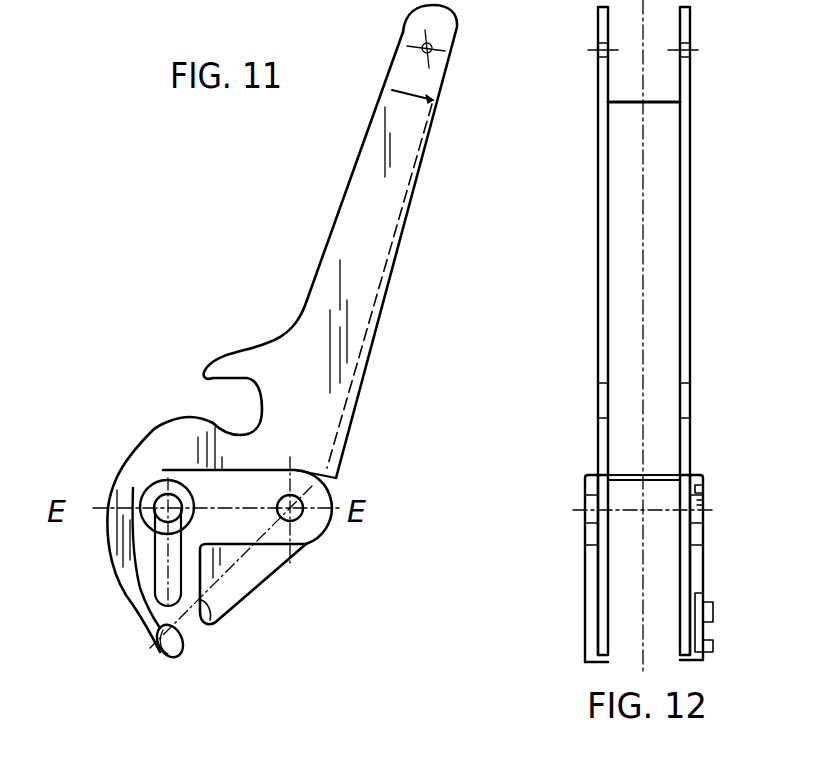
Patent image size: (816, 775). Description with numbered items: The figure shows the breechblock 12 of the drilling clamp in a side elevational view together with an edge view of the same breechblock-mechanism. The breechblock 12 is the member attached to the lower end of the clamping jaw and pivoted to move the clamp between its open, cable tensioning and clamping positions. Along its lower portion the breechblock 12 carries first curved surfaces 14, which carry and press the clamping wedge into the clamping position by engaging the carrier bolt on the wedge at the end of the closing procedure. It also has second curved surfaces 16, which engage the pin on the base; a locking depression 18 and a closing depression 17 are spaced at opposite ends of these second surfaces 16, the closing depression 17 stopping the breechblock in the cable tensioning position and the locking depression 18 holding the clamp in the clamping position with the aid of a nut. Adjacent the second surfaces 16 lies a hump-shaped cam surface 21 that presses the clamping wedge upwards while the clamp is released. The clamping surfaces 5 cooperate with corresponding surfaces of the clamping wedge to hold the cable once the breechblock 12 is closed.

In FIG. 11, the clamping surfaces 5 is at (400, 193).
In FIG. 11, the breechblock 12 is at (353, 245).
In FIG. 12, the breechblock 12 is at (604, 248).
In FIG. 11, the first curved surfaces 14 is at (237, 383).
In FIG. 11, the hump-shaped cam surface 21 is at (187, 415).
In FIG. 11, the locking depression 18 is at (146, 481).
In FIG. 12, the locking depression 18 is at (704, 490).
In FIG. 11, the closing depression 17 is at (150, 632).
In FIG. 12, the closing depression 17 is at (707, 625).
In FIG. 11, the second curved surfaces 16 is at (197, 620).